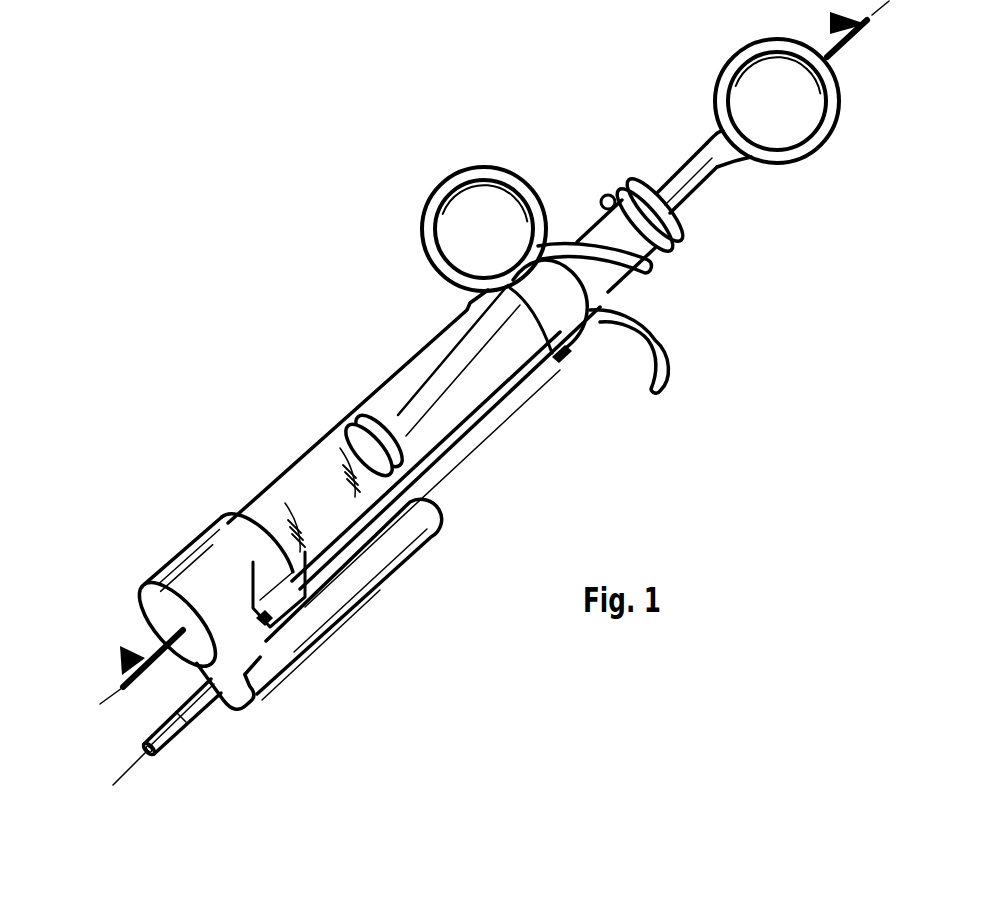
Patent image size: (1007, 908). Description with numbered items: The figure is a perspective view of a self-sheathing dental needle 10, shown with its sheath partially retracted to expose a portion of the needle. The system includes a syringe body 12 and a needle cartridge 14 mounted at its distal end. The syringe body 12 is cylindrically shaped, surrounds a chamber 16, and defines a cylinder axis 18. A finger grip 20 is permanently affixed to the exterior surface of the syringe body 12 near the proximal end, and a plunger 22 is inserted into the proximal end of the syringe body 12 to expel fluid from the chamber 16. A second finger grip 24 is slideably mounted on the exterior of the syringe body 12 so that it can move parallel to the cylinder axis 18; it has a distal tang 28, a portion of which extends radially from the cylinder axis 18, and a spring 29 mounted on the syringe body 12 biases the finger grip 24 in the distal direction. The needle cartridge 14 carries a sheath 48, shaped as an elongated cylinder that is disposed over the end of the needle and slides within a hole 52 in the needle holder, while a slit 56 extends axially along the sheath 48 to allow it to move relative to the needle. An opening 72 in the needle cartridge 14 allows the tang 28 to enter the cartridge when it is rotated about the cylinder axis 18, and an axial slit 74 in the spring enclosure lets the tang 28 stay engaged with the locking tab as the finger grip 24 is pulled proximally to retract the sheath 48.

The self-sheathing dental needle 10 is at (343, 226).
The syringe body 12 is at (343, 425).
The needle cartridge 14 is at (150, 586).
The chamber 16 is at (278, 492).
The cylinder axis 18 is at (82, 730).
The finger grip 20 is at (445, 180).
The plunger 22 is at (668, 178).
The second finger grip 24 is at (668, 350).
The distal tang 28 is at (350, 602).
The spring 29 is at (653, 272).
The sheath 48 is at (191, 736).
The hole 52 is at (248, 707).
The slit 56 is at (178, 718).
The opening 72 is at (287, 670).
The axial slit 74 is at (302, 628).